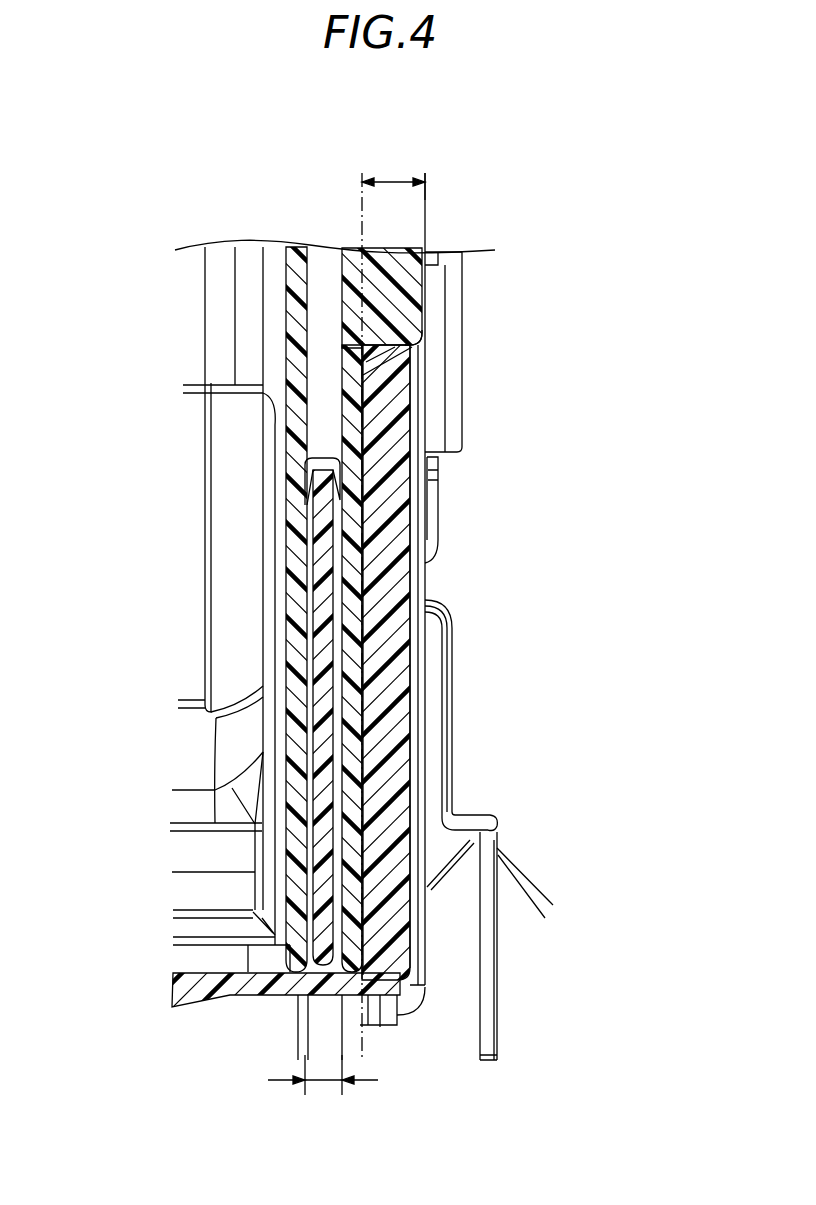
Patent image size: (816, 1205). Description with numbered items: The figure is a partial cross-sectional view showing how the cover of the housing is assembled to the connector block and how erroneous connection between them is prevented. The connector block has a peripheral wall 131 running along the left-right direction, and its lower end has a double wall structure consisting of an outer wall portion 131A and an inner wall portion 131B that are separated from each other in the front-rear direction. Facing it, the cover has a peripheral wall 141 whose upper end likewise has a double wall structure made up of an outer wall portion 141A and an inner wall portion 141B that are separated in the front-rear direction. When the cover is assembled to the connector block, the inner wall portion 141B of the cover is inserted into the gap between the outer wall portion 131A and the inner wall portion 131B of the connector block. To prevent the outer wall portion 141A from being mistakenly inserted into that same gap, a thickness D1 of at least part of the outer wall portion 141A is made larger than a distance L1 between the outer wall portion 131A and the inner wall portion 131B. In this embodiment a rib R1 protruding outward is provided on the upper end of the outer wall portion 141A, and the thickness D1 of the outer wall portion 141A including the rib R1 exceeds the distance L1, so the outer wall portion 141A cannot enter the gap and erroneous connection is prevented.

The peripheral wall 131 is at (427, 307).
The outer wall portion 131A is at (352, 558).
The inner wall portion 131B is at (298, 604).
The rib R1 is at (415, 362).
The peripheral wall 141 is at (413, 930).
The outer wall portion 141A is at (397, 733).
The inner wall portion 141B is at (385, 776).
The thickness D1 is at (388, 182).
The distance L1 is at (322, 1083).